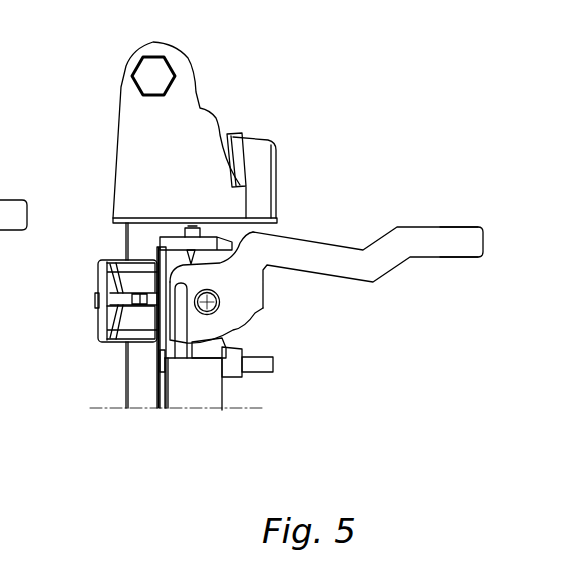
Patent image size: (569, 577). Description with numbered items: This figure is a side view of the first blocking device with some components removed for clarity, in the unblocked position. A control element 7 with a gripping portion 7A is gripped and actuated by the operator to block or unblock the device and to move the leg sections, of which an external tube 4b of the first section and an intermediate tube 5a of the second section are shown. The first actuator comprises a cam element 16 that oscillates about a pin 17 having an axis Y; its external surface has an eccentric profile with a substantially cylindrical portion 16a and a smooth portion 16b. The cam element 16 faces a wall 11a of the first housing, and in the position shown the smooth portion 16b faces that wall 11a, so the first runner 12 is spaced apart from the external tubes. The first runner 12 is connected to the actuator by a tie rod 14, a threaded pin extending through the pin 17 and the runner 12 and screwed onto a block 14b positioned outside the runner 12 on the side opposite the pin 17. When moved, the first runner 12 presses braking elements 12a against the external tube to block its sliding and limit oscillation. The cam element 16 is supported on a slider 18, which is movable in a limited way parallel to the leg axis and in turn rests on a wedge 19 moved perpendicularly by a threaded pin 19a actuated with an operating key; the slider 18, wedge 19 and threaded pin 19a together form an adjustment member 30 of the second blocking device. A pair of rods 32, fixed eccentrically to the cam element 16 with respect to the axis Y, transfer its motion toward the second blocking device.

The control element 7 is at (406, 276).
The gripping portion 7A is at (443, 232).
The wall 11a is at (118, 245).
The cam element 16 is at (232, 274).
The pin 17 is at (221, 300).
The axis Y is at (233, 311).
The smooth portion 16b is at (158, 283).
The first runner 12 is at (98, 326).
The braking elements 12a is at (138, 268).
The block 14b is at (95, 300).
The tie rod 14 is at (152, 301).
The external tube 4b is at (142, 402).
The rods 32 is at (162, 352).
The cylindrical portion 16a is at (178, 352).
The intermediate tube 5a is at (208, 397).
The slider 18 is at (226, 343).
The wedge 19 is at (231, 373).
The threaded pin 19a is at (265, 371).
The adjustment member 30 is at (247, 374).